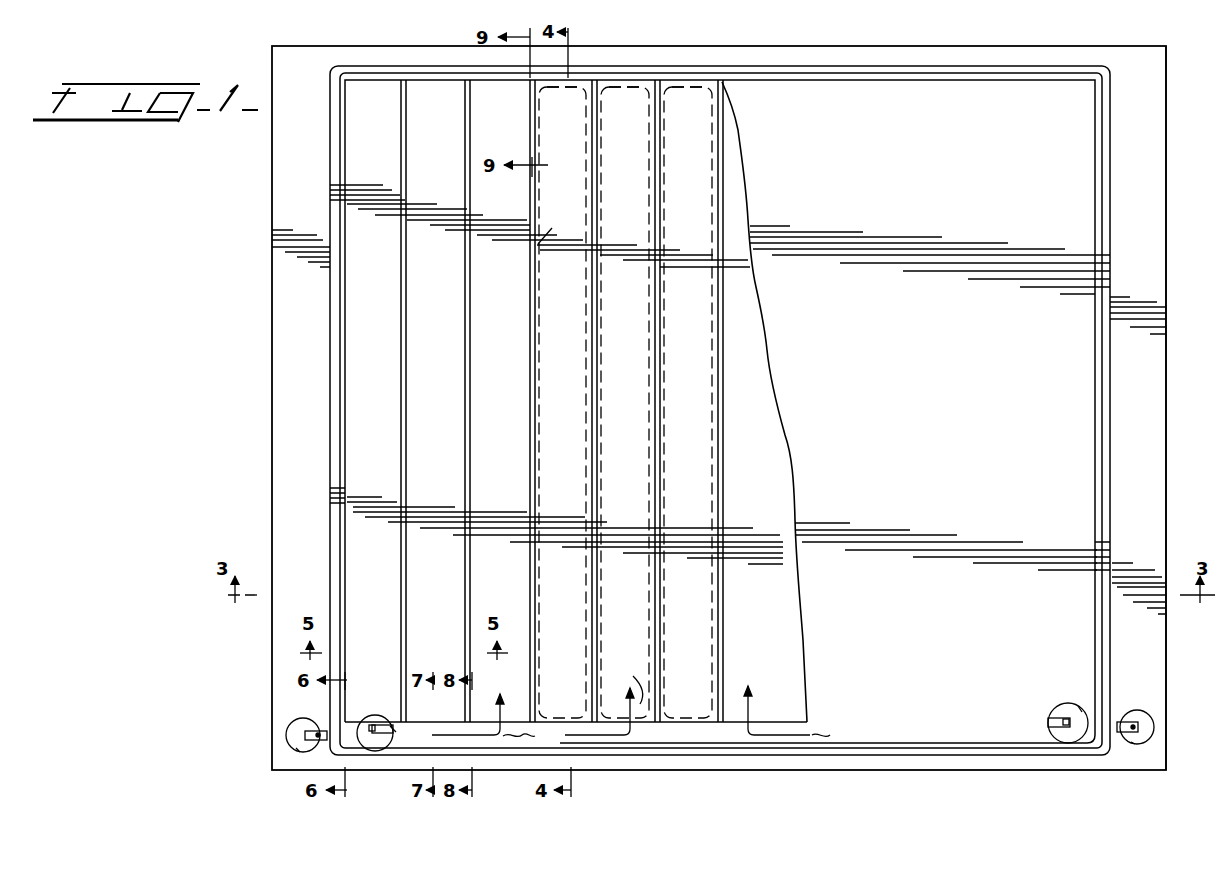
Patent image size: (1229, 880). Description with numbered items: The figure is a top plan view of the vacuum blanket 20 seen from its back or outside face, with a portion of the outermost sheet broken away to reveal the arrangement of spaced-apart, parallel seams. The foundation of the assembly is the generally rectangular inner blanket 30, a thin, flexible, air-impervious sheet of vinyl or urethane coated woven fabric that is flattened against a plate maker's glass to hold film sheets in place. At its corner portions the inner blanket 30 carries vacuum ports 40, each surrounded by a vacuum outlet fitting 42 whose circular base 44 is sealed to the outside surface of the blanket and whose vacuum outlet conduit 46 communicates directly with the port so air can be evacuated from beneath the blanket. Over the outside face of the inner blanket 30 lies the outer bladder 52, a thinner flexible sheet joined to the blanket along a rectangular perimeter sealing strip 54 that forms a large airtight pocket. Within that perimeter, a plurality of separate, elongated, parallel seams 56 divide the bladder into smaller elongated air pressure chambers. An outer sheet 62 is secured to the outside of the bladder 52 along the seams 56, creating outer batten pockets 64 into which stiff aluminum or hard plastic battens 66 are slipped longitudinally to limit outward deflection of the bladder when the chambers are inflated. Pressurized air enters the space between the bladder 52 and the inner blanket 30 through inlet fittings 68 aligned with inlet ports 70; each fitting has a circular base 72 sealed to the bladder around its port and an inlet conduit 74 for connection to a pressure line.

The vacuum blanket 20 is at (752, 776).
The inner blanket 30 is at (1153, 681).
The vacuum port 40 is at (290, 726).
The vacuum outlet fitting 42 is at (294, 742).
The circular base 44 is at (292, 738).
The vacuum outlet conduit 46 is at (298, 750).
The outer bladder 52 is at (330, 285).
The perimeter sealing strip 54 is at (345, 320).
The parallel seams 56 is at (410, 417).
The outer sheet 62 is at (546, 236).
The outer batten pockets 64 is at (593, 722).
The batten 66 is at (673, 88).
The inlet fitting 68 is at (372, 752).
The inlet port 70 is at (380, 718).
The circular base 72 is at (362, 704).
The inlet conduit 74 is at (392, 742).